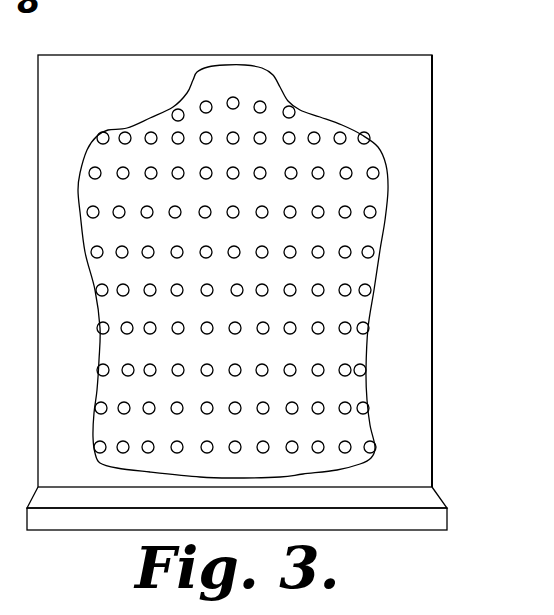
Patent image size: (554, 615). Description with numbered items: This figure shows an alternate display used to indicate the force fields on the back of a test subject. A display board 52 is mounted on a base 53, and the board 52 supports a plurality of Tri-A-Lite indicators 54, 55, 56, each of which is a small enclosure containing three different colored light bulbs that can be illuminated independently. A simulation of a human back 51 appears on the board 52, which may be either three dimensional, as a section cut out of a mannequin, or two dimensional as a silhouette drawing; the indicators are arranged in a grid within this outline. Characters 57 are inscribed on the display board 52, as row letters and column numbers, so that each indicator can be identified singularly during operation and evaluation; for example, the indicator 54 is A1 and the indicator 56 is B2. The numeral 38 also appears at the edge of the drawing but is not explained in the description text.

The peg board assembly 38 is at (223, 271).
The simulation of a human back 51 is at (218, 76).
The display board 52 is at (405, 70).
The base 53 is at (40, 501).
The Tri-A-Lite indicator 54 is at (100, 133).
The Tri-A-Lite indicator 55 is at (121, 132).
The Tri-A-Lite indicator 56 is at (124, 172).
The characters 57 is at (60, 175).